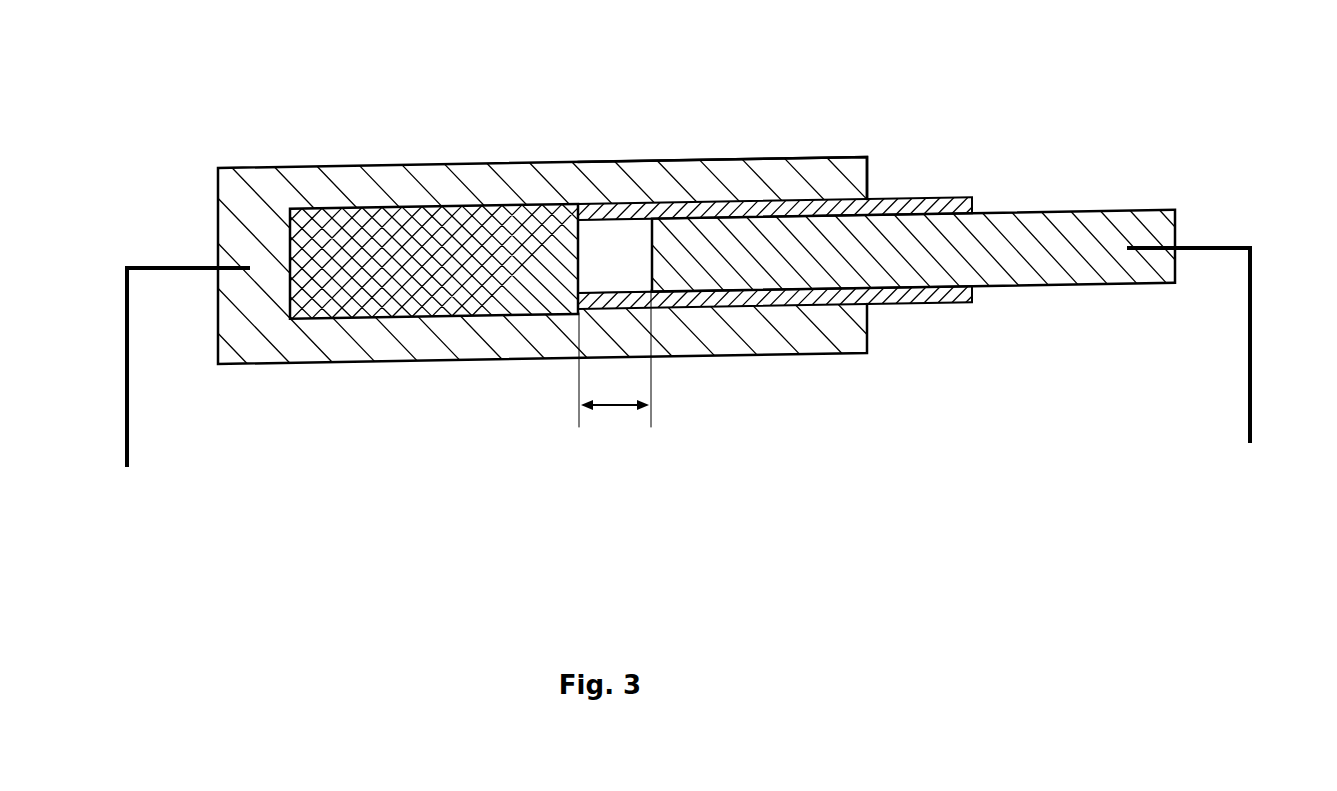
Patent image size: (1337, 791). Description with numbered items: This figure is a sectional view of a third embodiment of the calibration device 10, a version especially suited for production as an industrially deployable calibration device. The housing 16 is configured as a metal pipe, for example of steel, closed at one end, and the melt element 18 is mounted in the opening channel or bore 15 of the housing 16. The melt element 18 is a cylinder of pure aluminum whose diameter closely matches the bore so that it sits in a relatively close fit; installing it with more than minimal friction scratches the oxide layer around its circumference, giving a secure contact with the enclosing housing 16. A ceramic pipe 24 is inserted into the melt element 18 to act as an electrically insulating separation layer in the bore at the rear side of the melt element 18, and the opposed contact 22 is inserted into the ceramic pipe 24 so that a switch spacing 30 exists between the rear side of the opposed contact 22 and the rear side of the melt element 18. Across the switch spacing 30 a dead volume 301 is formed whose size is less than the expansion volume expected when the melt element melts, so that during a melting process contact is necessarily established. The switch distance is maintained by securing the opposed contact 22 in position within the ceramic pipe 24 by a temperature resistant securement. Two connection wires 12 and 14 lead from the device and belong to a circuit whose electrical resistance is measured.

The calibration device 10 is at (349, 405).
The connection wire 12 is at (127, 365).
The connection wire 14 is at (1257, 388).
The bore 15 is at (788, 197).
The housing 16 is at (440, 187).
The melt element 18 is at (397, 287).
The opposed contact 22 is at (1090, 223).
The ceramic pipe 24 is at (950, 310).
The switch spacing 30 is at (620, 412).
The dead volume 301 is at (620, 253).